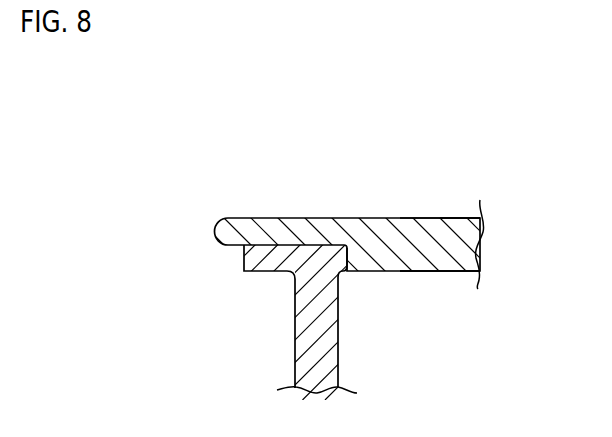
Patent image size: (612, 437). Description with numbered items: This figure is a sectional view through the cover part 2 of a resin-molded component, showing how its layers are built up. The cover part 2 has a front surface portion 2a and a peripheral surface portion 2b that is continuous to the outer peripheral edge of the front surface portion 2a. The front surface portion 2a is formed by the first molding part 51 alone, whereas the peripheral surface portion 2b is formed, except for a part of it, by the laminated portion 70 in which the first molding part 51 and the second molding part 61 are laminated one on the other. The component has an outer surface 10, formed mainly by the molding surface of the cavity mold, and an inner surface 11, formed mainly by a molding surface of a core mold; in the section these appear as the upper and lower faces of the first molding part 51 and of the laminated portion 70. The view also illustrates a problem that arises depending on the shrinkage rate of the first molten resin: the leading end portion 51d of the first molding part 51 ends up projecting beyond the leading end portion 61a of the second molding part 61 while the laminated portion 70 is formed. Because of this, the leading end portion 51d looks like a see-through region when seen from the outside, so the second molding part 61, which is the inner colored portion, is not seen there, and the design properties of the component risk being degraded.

The cover part 2 is at (422, 217).
The front surface portion 2a is at (452, 217).
The peripheral surface portion 2b is at (295, 338).
The outer surface 10 is at (378, 217).
The inner surface 11 is at (453, 272).
The first molding part 51 is at (345, 225).
The leading end portion of the first molding part 51d is at (218, 222).
The second molding part 61 is at (304, 320).
The leading end portion of the second molding part 61a is at (244, 270).
The laminated portion 70 is at (272, 217).